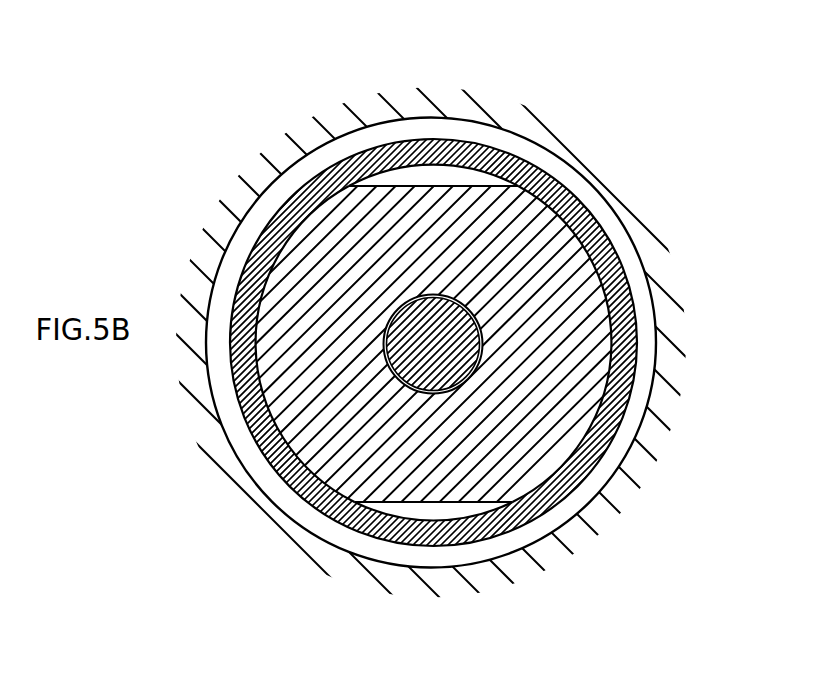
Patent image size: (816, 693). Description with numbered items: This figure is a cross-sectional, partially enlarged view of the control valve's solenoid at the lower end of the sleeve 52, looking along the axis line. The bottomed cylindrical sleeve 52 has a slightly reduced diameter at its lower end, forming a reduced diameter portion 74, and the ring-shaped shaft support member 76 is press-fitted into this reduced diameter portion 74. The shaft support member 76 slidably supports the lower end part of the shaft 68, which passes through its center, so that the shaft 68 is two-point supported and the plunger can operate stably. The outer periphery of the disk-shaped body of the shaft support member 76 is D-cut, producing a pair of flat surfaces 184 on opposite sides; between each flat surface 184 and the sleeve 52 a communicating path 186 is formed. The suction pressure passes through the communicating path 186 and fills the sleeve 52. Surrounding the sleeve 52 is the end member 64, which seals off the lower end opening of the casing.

The end member 64 is at (597, 158).
The reduced diameter portion 74 is at (408, 345).
The sleeve 52 is at (610, 236).
The shaft support member 76 is at (633, 306).
The shaft 68 is at (387, 332).
The flat surfaces 184 is at (467, 184).
The communicating path 186 is at (410, 178).